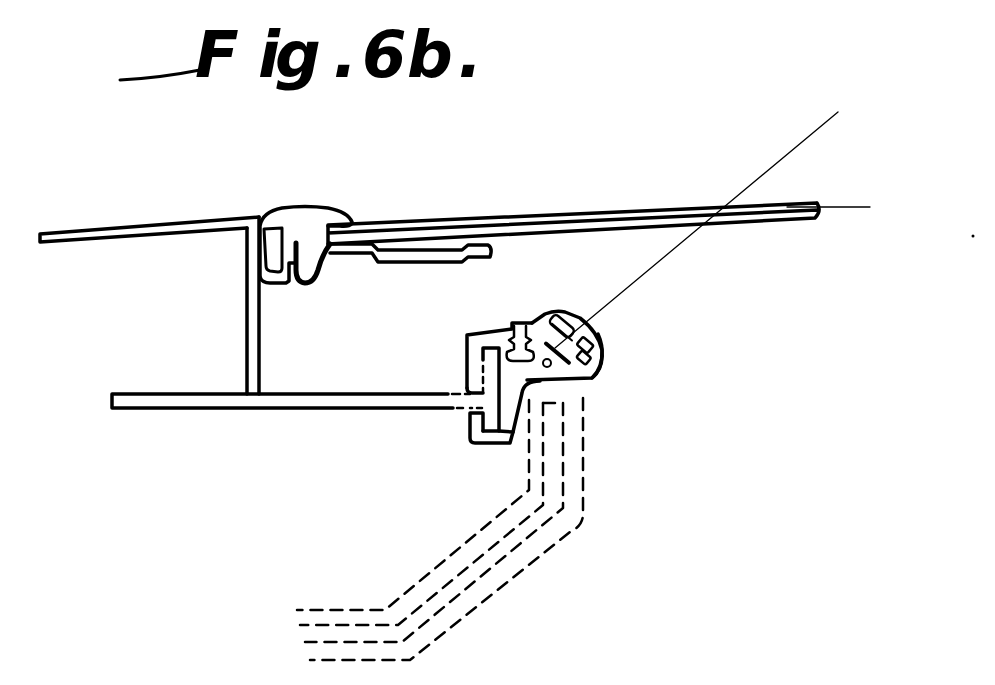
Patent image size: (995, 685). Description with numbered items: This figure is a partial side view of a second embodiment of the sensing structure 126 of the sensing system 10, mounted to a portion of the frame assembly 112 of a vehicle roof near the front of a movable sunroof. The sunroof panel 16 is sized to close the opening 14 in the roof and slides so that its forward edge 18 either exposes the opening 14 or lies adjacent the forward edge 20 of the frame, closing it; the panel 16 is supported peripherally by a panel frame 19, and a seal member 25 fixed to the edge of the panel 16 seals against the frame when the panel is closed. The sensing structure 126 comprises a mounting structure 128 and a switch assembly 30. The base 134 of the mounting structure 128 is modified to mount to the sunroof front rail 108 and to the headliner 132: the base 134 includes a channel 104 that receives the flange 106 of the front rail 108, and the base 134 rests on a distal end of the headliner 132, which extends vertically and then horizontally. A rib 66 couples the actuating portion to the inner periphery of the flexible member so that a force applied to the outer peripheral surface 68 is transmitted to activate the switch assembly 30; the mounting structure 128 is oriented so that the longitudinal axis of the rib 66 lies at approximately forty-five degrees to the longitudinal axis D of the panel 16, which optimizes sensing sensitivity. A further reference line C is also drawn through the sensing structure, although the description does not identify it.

The sensing system 10 is at (487, 319).
The opening 14 is at (270, 214).
The sunroof panel 16 is at (490, 222).
The forward edge of the panel 18 is at (262, 279).
The panel frame 19 is at (397, 263).
The forward edge of the frame assembly 20 is at (264, 214).
The seal member 25 is at (315, 214).
The switch assembly 30 is at (590, 350).
The rib 66 is at (597, 332).
The outer peripheral surface 68 is at (577, 322).
The channel 104 is at (462, 373).
The flange 106 is at (470, 438).
The front rail 108 is at (355, 382).
The frame assembly 112 is at (254, 342).
The sensing structure 126 is at (603, 368).
The mounting structure 128 is at (593, 380).
The headliner 132 is at (550, 530).
The base 134 is at (511, 445).
The axis line C is at (752, 181).
The longitudinal axis of the panel D is at (787, 213).